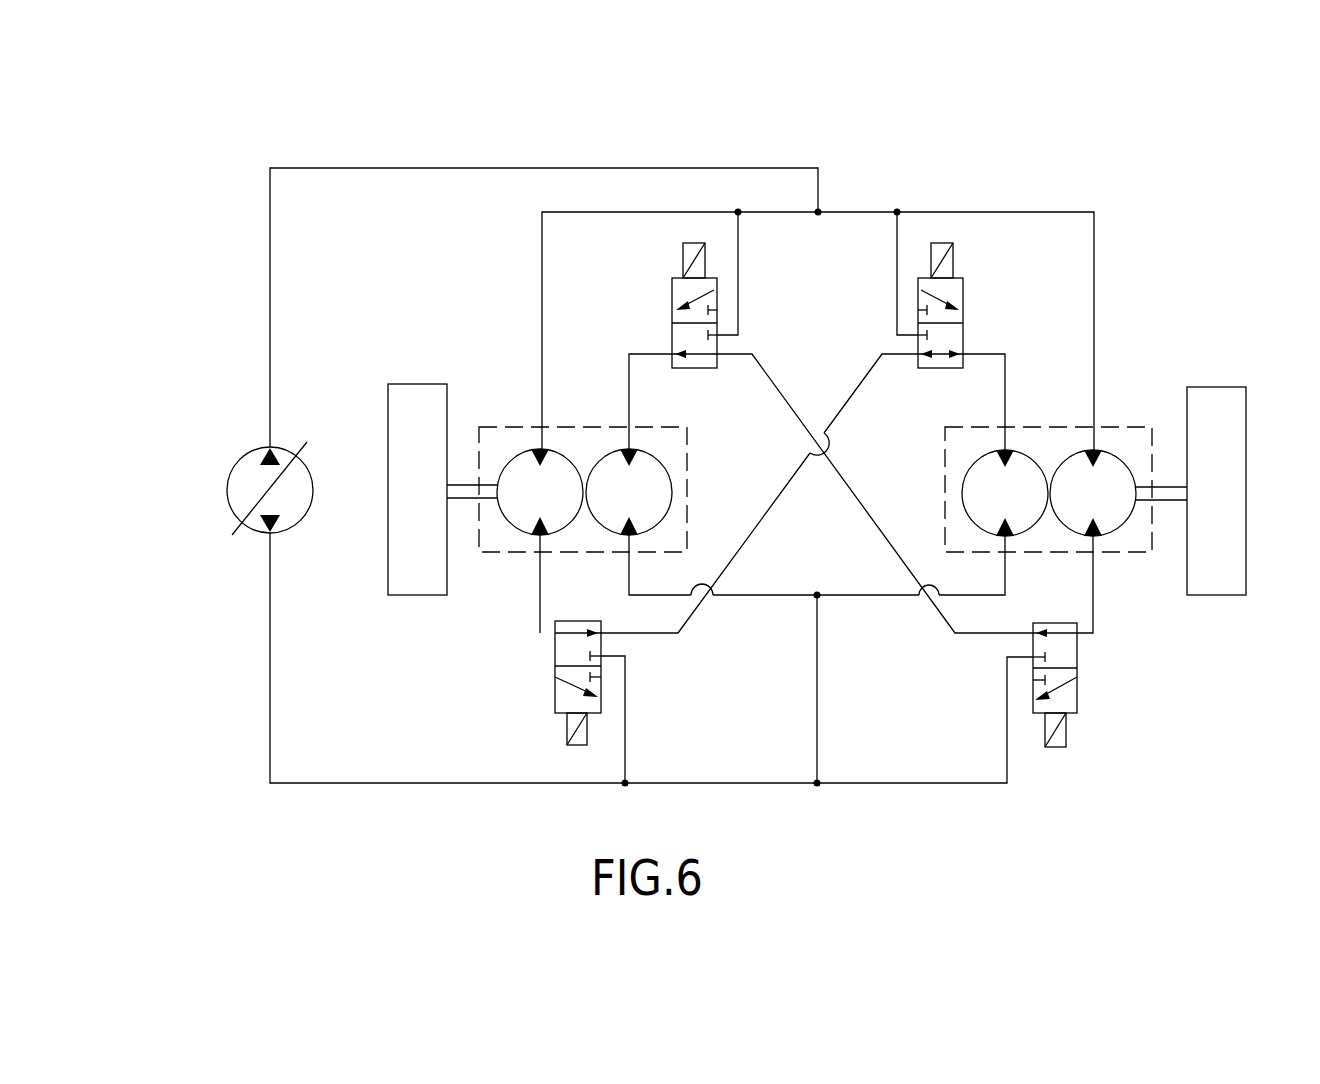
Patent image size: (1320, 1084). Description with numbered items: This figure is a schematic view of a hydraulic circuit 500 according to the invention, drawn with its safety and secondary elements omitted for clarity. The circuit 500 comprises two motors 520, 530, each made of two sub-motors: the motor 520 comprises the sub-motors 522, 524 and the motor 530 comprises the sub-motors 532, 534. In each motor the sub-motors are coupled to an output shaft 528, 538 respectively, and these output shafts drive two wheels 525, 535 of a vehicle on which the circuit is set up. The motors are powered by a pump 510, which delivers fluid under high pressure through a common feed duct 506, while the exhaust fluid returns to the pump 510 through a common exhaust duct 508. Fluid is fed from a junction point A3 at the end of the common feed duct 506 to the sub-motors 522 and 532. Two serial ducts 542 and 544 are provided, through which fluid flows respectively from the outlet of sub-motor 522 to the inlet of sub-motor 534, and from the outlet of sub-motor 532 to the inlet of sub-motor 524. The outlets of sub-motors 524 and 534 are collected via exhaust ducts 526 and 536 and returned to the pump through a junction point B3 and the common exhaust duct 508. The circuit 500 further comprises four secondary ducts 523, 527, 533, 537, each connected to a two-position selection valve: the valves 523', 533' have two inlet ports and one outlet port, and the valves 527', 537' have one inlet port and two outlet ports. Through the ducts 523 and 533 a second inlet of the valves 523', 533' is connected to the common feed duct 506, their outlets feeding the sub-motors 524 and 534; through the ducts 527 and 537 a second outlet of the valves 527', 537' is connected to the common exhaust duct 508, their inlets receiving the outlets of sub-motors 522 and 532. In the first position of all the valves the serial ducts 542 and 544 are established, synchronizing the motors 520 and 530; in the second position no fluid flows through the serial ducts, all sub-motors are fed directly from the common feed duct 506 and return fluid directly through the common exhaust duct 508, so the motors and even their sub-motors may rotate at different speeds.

The hydraulic circuit 500 is at (1002, 146).
The common feed duct 506 is at (545, 168).
The common exhaust duct 508 is at (417, 784).
The pump 510 is at (227, 490).
The motor 520 is at (581, 420).
The sub-motor 522 is at (540, 541).
The secondary duct 523 is at (707, 316).
The two-position selection valve 523' is at (657, 266).
The sub-motor 524 is at (629, 444).
The wheel 525 is at (420, 384).
The exhaust duct 526 is at (768, 596).
The secondary duct 527 is at (594, 659).
The two-position selection valve 527' is at (540, 724).
The output shaft 528 is at (465, 499).
The motor 530 is at (1054, 420).
The sub-motor 532 is at (1093, 541).
The secondary duct 533 is at (926, 316).
The two-position selection valve 533' is at (978, 266).
The sub-motor 534 is at (1005, 445).
The wheel 535 is at (1220, 387).
The exhaust duct 536 is at (870, 596).
The secondary duct 537 is at (1038, 660).
The two-position selection valve 537' is at (1091, 725).
The output shaft 538 is at (1170, 501).
The serial duct 542 is at (758, 528).
The serial duct 544 is at (877, 528).
The junction point A3 is at (818, 211).
The junction point B3 is at (818, 782).